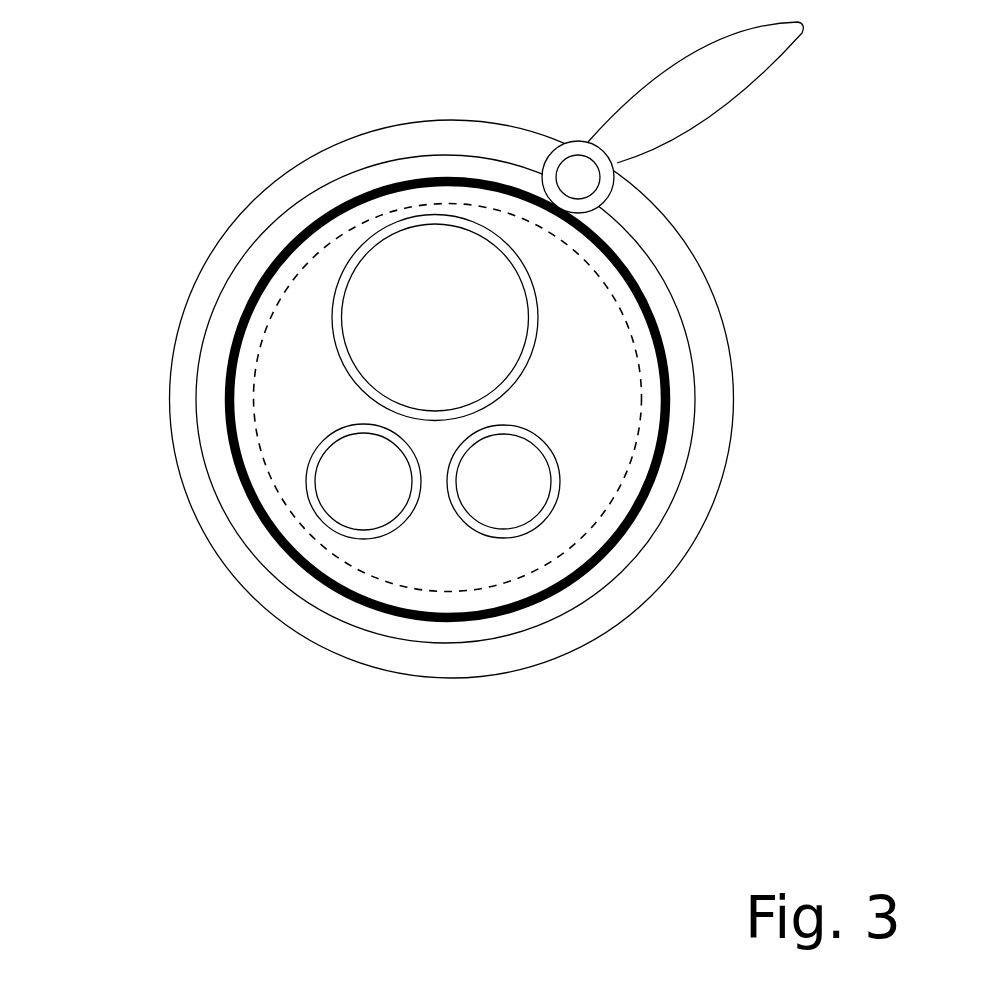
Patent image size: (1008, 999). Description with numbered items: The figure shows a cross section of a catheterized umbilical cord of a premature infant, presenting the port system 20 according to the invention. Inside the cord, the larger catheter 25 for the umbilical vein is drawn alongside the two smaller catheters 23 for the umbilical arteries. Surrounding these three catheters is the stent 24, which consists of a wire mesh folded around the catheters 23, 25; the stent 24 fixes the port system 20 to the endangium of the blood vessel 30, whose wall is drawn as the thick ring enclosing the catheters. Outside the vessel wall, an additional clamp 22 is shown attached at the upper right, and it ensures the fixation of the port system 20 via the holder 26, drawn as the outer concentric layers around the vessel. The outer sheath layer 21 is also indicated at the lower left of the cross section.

The port system 20 is at (193, 103).
The jacket 21 is at (270, 542).
The clamp 22 is at (622, 172).
The catheters for the umbilical arteries 23 is at (493, 542).
The stent 24 is at (615, 502).
The catheter for the umbilical vein 25 is at (332, 295).
The holder 26 is at (673, 371).
The blood vessel 30 is at (243, 397).